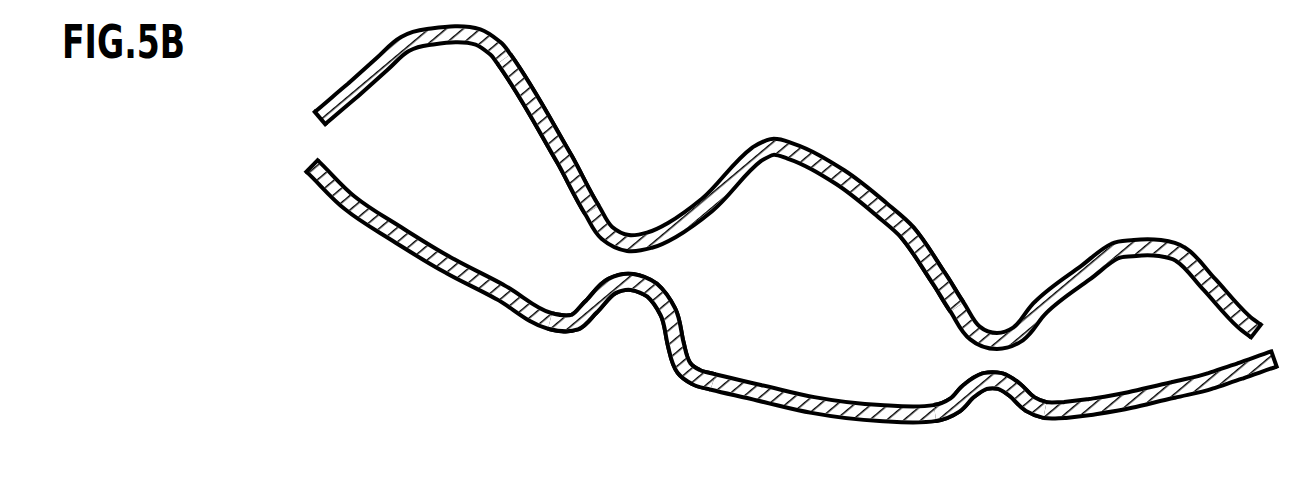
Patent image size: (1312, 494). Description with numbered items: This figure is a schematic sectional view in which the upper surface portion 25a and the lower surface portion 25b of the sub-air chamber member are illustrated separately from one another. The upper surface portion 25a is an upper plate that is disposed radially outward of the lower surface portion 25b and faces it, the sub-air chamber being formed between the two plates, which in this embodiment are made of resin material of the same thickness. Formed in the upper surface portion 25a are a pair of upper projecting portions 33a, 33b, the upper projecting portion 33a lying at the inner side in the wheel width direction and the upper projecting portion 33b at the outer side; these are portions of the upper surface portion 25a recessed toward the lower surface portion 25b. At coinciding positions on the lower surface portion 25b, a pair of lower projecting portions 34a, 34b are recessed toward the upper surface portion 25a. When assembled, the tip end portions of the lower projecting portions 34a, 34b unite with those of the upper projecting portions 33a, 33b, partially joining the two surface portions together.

The upper surface portion 25a is at (821, 157).
The lower surface portion 25b is at (733, 398).
The upper projecting portion 33a is at (578, 210).
The upper projecting portion 33b is at (941, 310).
The lower projecting portion 34a is at (586, 300).
The lower projecting portion 34b is at (946, 397).